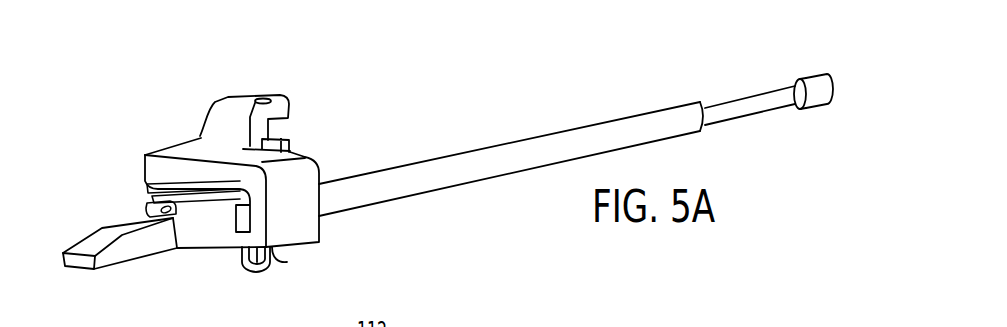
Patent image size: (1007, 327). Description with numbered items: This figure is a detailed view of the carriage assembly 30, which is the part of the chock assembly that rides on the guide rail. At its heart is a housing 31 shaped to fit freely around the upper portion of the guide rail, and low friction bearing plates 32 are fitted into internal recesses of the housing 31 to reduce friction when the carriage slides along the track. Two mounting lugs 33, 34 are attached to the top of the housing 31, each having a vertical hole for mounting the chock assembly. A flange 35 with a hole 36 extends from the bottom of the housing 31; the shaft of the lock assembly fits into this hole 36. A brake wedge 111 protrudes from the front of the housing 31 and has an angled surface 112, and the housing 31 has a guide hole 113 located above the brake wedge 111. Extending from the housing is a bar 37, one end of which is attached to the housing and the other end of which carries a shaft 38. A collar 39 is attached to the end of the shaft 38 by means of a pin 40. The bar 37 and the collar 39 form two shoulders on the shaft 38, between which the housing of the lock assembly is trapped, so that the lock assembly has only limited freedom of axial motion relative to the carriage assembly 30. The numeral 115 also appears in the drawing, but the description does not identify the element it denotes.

The carriage assembly 30 is at (308, 245).
The housing 31 is at (308, 245).
The low friction bearing plates 32 is at (152, 185).
The mounting lug 33 is at (288, 102).
The mounting lug 34 is at (291, 147).
The flange 35 is at (270, 268).
The hole 36 is at (243, 265).
The bar 37 is at (482, 150).
The shaft 38 is at (748, 93).
The collar 39 is at (813, 110).
The pin 40 is at (805, 76).
The brake wedge 111 is at (103, 251).
The angled surface 112 is at (88, 240).
The guide hole 113 is at (147, 207).
The lower element 115 is at (434, 326).